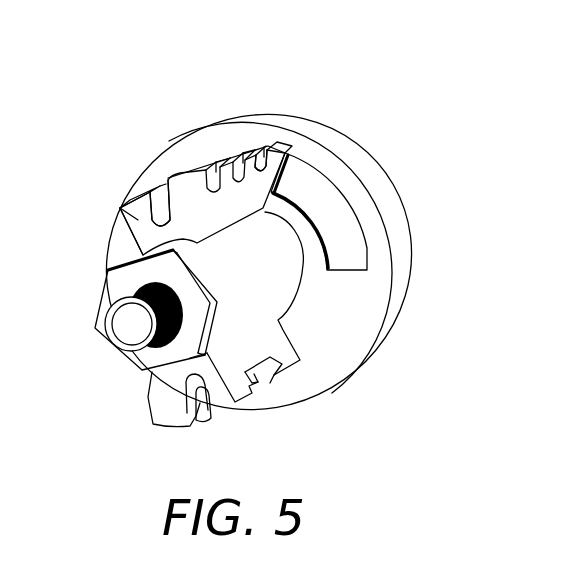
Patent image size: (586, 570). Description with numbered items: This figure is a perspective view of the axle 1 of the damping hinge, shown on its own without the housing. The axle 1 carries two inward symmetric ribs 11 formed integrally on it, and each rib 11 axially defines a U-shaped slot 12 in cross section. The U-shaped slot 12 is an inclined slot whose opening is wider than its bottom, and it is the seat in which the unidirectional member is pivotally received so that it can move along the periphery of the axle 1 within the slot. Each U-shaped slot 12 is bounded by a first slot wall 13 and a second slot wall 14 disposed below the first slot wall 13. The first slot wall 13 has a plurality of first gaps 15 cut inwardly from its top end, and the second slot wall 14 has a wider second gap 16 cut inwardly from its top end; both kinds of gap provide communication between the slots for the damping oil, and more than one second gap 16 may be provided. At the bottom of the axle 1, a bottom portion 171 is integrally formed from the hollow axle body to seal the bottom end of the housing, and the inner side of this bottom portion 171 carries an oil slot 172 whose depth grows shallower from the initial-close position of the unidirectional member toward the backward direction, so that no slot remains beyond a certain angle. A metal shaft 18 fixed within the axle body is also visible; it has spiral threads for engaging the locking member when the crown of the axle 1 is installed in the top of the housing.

The axle 1 is at (373, 103).
The rib 11 is at (170, 403).
The U-shaped slot 12 is at (158, 208).
The first slot wall 13 is at (183, 197).
The second slot wall 14 is at (122, 207).
The first gap 15 is at (259, 160).
The second gap 16 is at (272, 370).
The bottom portion 171 is at (390, 215).
The oil slot 172 is at (350, 250).
The metal shaft 18 is at (125, 322).